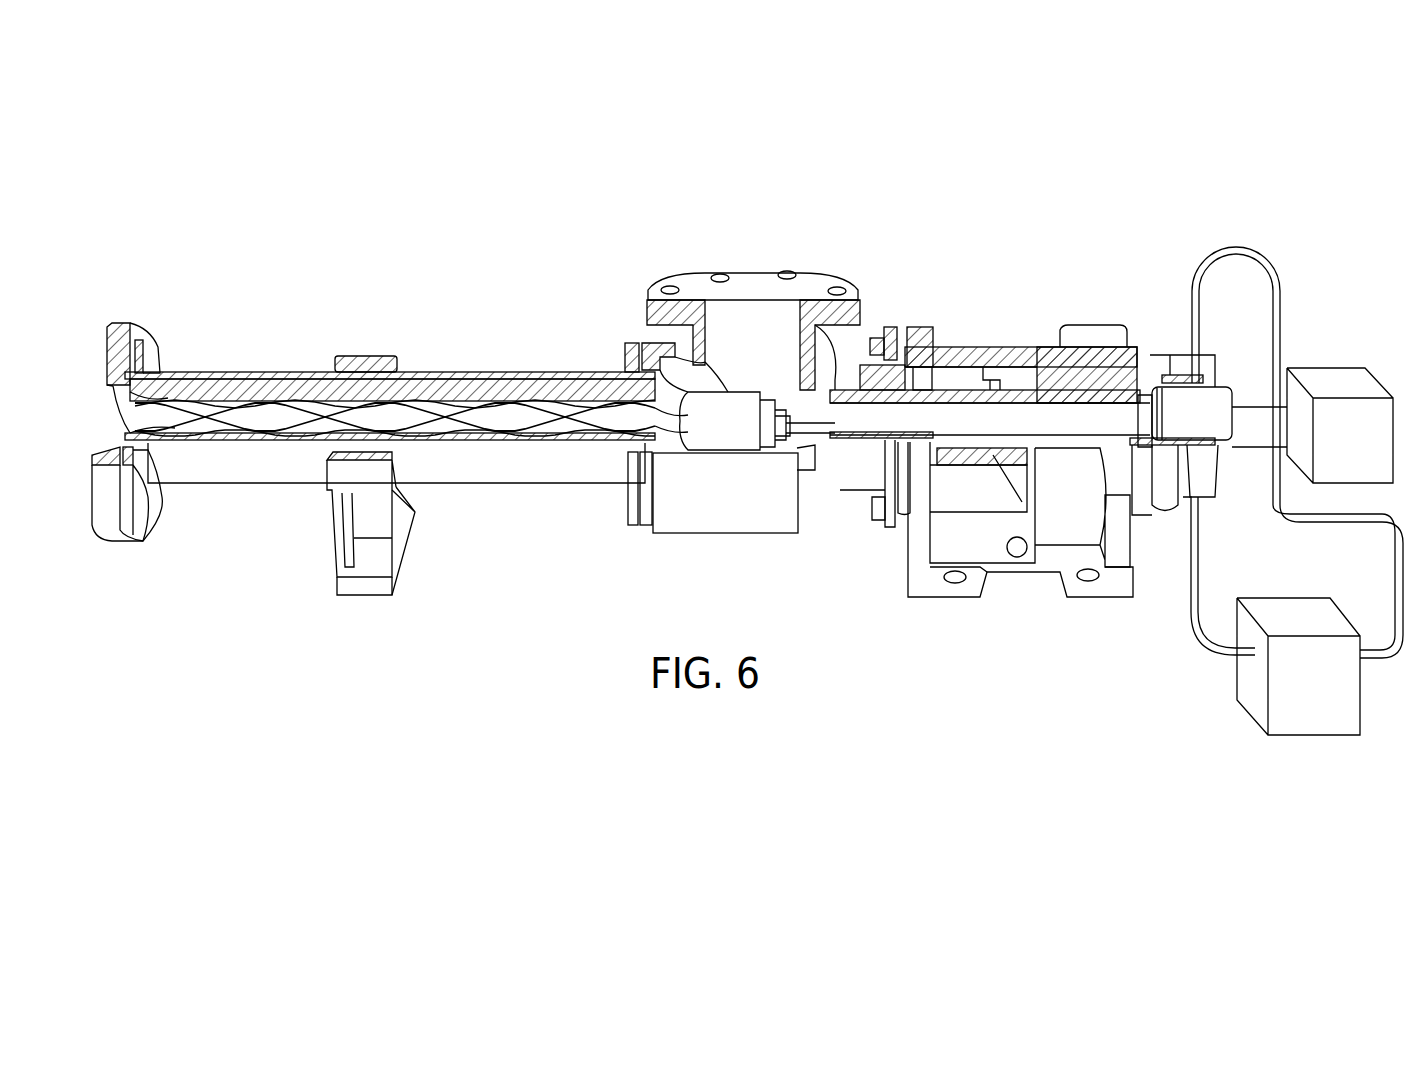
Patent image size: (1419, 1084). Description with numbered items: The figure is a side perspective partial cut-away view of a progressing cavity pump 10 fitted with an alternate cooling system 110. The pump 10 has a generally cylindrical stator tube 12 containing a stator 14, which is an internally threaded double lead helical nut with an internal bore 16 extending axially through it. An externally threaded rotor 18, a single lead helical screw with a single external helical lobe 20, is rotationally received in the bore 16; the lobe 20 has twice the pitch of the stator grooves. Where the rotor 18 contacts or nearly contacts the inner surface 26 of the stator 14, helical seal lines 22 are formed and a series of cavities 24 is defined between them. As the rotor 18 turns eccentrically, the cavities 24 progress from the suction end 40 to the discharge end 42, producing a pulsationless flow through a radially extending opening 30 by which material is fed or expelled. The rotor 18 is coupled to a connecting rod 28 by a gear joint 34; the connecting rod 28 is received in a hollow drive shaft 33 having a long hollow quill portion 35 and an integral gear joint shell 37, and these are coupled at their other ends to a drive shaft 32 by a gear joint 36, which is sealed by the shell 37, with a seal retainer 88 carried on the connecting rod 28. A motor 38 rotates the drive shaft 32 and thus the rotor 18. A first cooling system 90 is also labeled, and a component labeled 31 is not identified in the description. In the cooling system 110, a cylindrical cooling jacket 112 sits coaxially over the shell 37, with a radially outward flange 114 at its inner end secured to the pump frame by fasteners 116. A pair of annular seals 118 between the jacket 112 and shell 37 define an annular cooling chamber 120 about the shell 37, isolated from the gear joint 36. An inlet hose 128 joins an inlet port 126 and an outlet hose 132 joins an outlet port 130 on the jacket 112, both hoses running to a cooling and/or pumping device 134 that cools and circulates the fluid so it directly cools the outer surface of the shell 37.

The progressing cavity pump 10 is at (1226, 195).
The stator tube 12 is at (268, 482).
The stator 14 is at (395, 366).
The internal bore 16 is at (235, 415).
The rotor 18 is at (205, 413).
The external helical lobe 20 is at (235, 416).
The helical seal lines 22 is at (320, 406).
The cavities 24 is at (500, 400).
The inner surface 26 is at (480, 415).
The connecting rod 28 is at (802, 423).
The radially extending opening 30 is at (751, 303).
The bearing housing 31 is at (999, 467).
The drive shaft 32 is at (1262, 405).
The hollow drive shaft 33 is at (935, 412).
The gear joint 34 is at (733, 421).
The hollow quill portion 35 is at (1030, 412).
The gear joint 36 is at (1150, 405).
The gear joint shell 37 is at (1236, 422).
The motor 38 is at (1340, 425).
The suction end 40 is at (603, 575).
The discharge end 42 is at (133, 485).
The seal retainer 88 is at (778, 430).
The first cooling system 90 is at (727, 392).
The cooling system 110 is at (1094, 739).
The cooling jacket 112 is at (1218, 490).
The flange 114 is at (1180, 383).
The fasteners 116 is at (1185, 345).
The annular seals 118 is at (1150, 352).
The cooling chamber 120 is at (1181, 416).
The inlet port 126 is at (1185, 494).
The inlet hose 128 is at (1204, 587).
The outlet port 130 is at (1205, 362).
The outlet hose 132 is at (1278, 268).
The cooling and/or pumping device 134 is at (1308, 735).